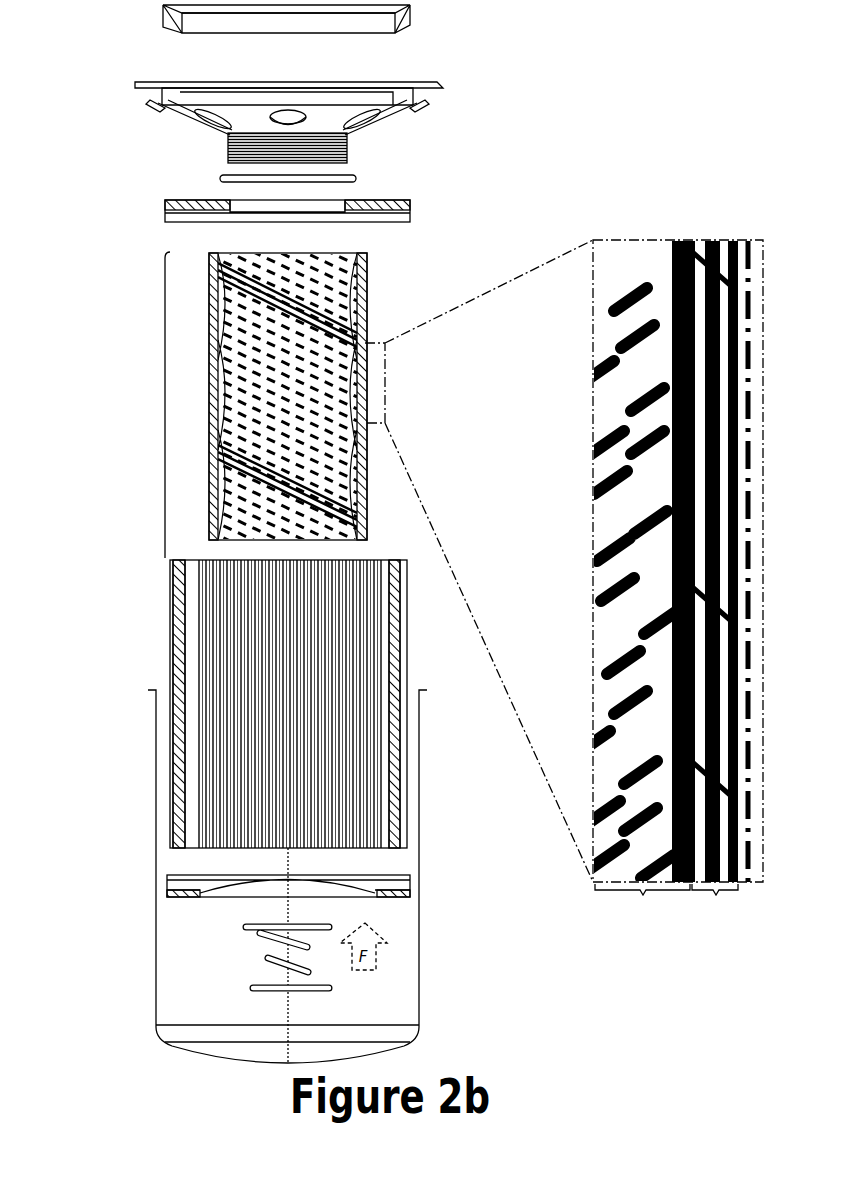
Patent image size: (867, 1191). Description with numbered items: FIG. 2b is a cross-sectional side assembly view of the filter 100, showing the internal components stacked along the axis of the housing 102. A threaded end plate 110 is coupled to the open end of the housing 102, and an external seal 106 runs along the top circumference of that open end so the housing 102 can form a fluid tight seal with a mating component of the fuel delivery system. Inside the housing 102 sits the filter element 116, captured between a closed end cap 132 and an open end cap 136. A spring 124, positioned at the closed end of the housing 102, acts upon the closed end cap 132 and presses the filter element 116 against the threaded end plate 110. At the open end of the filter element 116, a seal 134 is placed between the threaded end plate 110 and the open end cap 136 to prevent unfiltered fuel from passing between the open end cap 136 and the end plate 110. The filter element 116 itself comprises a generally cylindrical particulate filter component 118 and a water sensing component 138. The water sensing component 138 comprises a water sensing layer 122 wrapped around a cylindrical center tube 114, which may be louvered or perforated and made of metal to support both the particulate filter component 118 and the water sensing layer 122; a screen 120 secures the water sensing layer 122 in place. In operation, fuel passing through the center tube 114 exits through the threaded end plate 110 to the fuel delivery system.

The filter 100 is at (610, 27).
The housing 102 is at (423, 752).
The external seal 106 is at (416, 18).
The threaded end plate 110 is at (426, 105).
The center tube 114 is at (633, 605).
The filter element 116 is at (165, 535).
The particulate filter component 118 is at (411, 620).
The screen 120 is at (753, 780).
The water sensing layer 122 is at (705, 581).
The spring 124 is at (268, 947).
The closed end cap 132 is at (281, 897).
The seal 134 is at (368, 178).
The open end cap 136 is at (295, 222).
The water sensing component 138 is at (378, 280).